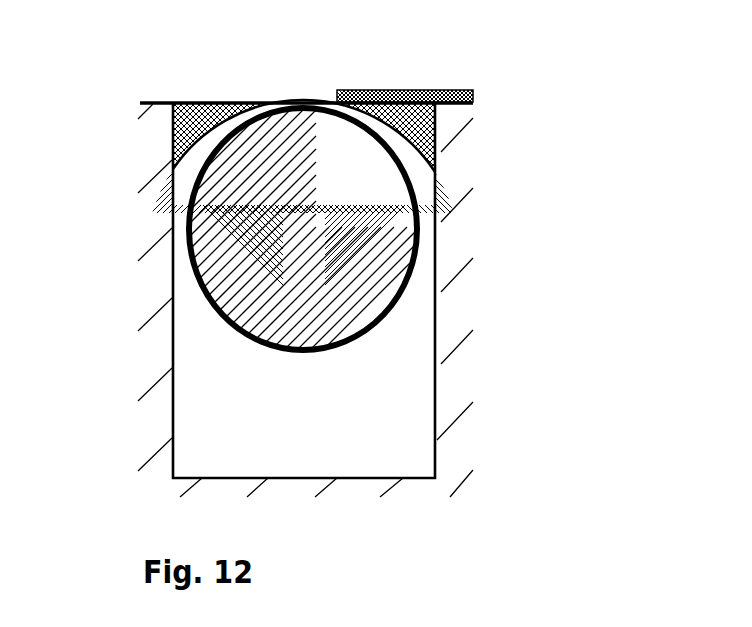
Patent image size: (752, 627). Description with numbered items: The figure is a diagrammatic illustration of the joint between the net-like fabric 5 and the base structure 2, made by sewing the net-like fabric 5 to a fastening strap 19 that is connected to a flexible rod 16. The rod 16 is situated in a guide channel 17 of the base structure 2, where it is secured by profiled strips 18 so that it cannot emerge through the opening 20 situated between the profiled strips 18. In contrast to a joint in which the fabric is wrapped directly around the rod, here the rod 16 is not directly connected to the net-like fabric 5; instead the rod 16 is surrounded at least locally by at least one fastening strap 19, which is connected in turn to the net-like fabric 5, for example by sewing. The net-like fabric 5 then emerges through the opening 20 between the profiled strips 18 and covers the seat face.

The base structure 2 is at (150, 413).
The net-like fabric 5 is at (457, 92).
The flexible rod 16 is at (353, 267).
The guide channel 17 is at (380, 450).
The profiled strips 18 is at (435, 157).
The fastening strap 19 is at (473, 103).
The opening 20 is at (283, 103).